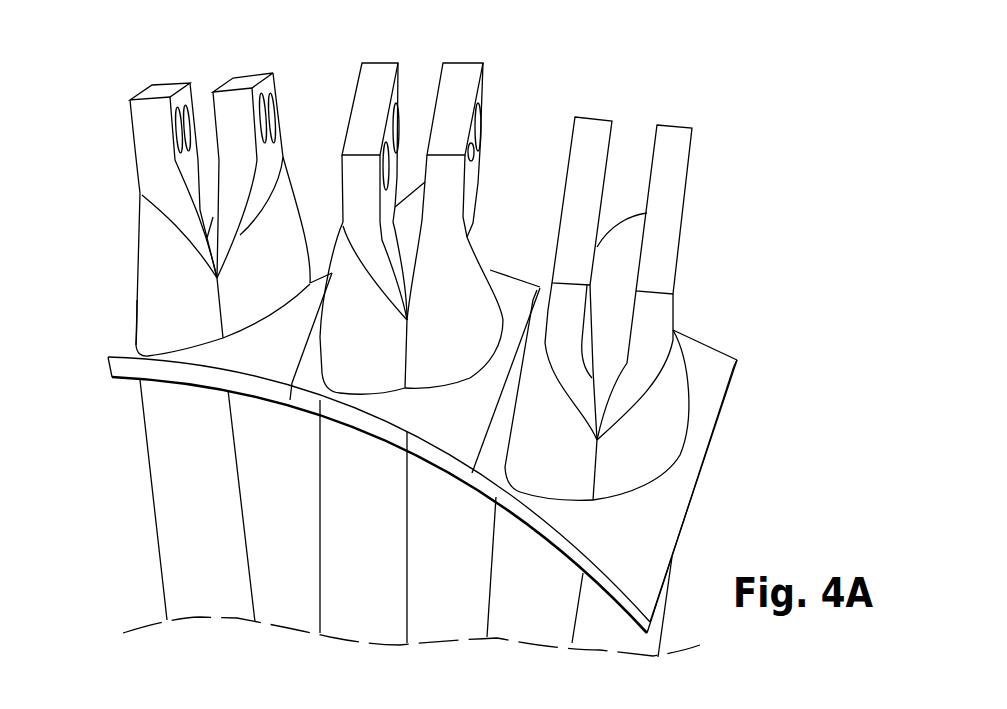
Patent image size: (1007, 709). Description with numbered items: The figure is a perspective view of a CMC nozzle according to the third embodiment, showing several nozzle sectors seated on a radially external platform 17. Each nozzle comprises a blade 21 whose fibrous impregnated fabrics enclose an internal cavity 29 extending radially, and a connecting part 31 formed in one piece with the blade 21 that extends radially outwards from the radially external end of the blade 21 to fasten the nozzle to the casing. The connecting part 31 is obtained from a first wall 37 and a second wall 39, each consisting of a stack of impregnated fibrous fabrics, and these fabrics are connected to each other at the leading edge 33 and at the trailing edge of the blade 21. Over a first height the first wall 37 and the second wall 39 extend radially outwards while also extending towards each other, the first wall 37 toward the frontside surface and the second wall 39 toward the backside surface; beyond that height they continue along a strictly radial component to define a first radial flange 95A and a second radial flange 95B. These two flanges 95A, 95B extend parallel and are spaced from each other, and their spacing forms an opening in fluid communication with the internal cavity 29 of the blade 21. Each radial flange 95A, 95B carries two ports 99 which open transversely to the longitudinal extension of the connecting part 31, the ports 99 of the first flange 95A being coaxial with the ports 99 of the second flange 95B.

The radially external platform 17 is at (708, 363).
The blade 21 is at (150, 473).
The internal cavity 29 is at (613, 307).
The connecting part 31 is at (135, 234).
The leading edge 33 is at (577, 610).
The first wall 37 is at (128, 259).
The second wall 39 is at (270, 230).
The first radial flange 95A is at (600, 115).
The second radial flange 95B is at (695, 128).
The ports 99 is at (255, 117).